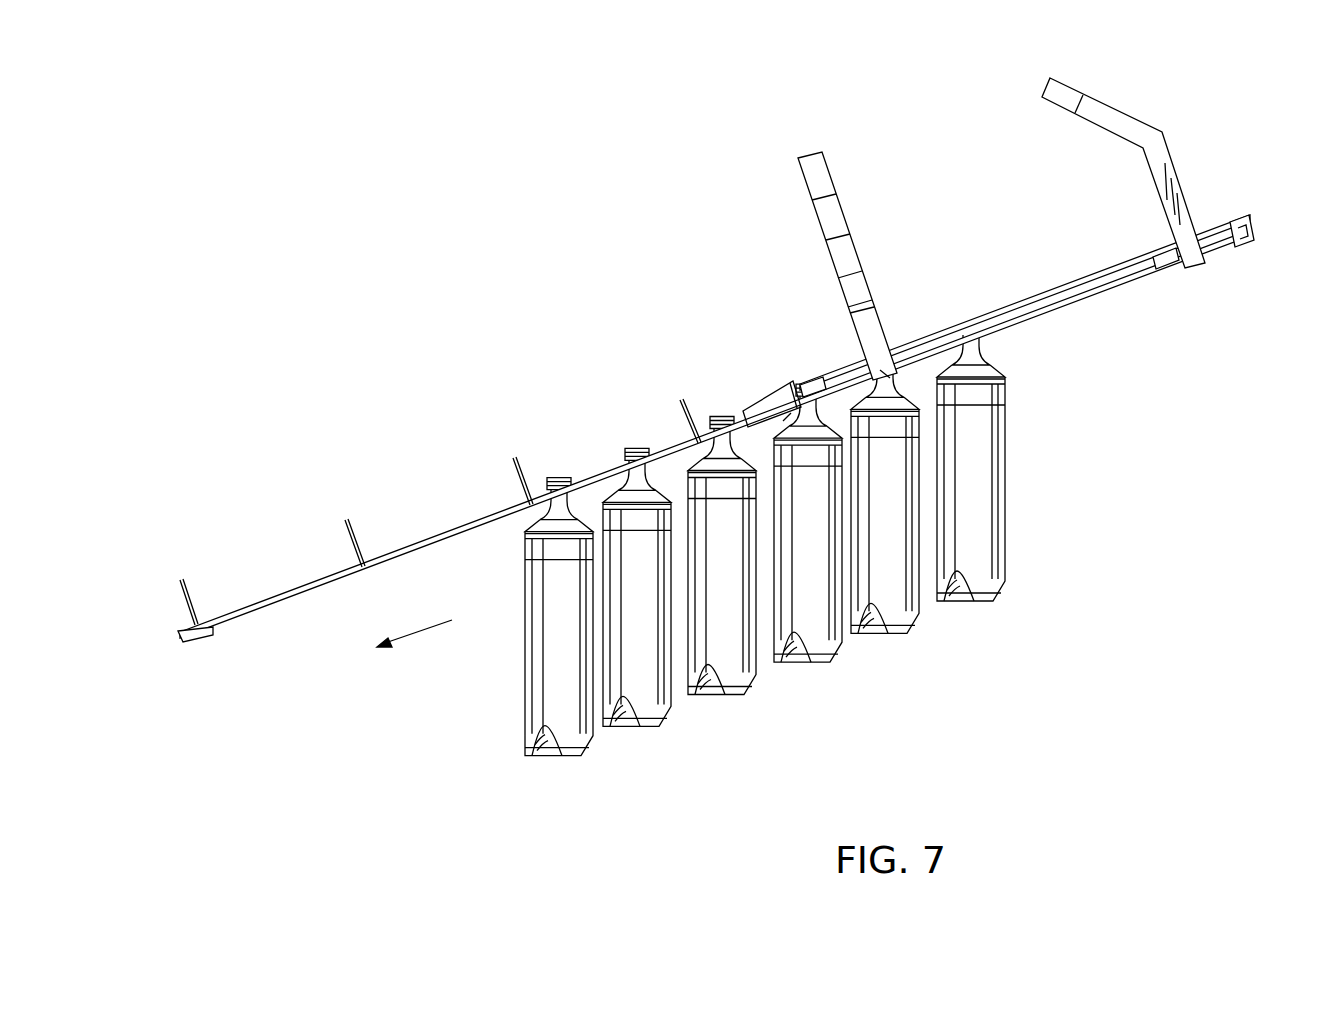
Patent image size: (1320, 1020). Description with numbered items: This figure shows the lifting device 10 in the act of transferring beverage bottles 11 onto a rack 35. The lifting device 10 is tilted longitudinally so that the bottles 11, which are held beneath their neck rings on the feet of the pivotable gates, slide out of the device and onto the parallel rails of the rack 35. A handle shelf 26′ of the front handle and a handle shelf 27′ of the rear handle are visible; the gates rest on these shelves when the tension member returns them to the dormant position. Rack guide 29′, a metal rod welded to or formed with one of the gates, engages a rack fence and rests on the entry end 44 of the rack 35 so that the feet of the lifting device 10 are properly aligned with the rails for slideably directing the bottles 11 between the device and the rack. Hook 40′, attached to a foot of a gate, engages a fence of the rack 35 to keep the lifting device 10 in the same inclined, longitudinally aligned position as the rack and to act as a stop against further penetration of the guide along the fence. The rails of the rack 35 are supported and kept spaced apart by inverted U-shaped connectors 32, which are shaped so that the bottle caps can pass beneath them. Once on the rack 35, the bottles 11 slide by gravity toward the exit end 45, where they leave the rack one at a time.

The lifting device 10 is at (989, 244).
The bottles 11 is at (582, 748).
The handle shelf 26′ is at (898, 374).
The handle shelf 27′ is at (1197, 268).
The rack guide 29′ is at (768, 396).
The inverted U-shaped connectors 32 is at (183, 580).
The rack 35 is at (502, 370).
The hook 40′ is at (789, 419).
The entry end 44 is at (745, 400).
The exit end 45 is at (170, 630).